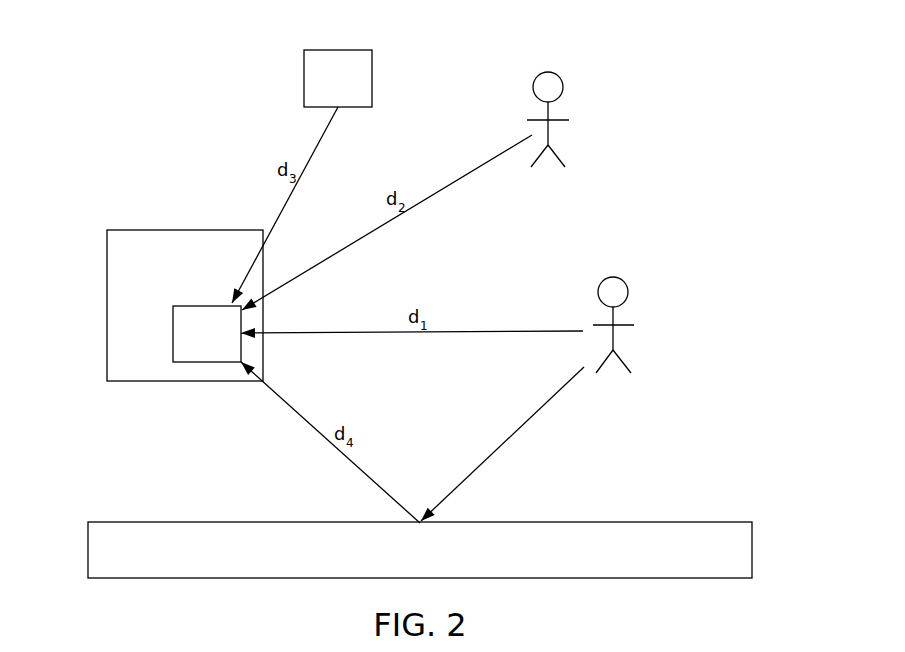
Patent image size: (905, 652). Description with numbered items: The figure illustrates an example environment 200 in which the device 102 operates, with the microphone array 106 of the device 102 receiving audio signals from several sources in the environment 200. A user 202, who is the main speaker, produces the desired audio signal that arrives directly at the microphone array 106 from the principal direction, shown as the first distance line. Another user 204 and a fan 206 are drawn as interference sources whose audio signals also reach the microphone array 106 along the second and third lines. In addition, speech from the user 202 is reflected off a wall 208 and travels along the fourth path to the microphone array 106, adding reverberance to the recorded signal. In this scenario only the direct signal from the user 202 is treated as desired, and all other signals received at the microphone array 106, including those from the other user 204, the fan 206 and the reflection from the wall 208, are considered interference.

The environment 200 is at (101, 140).
The device 102 is at (107, 305).
The microphone array 106 is at (193, 362).
The user 202 is at (614, 277).
The another user 204 is at (548, 72).
The fan 206 is at (304, 78).
The wall 208 is at (612, 522).